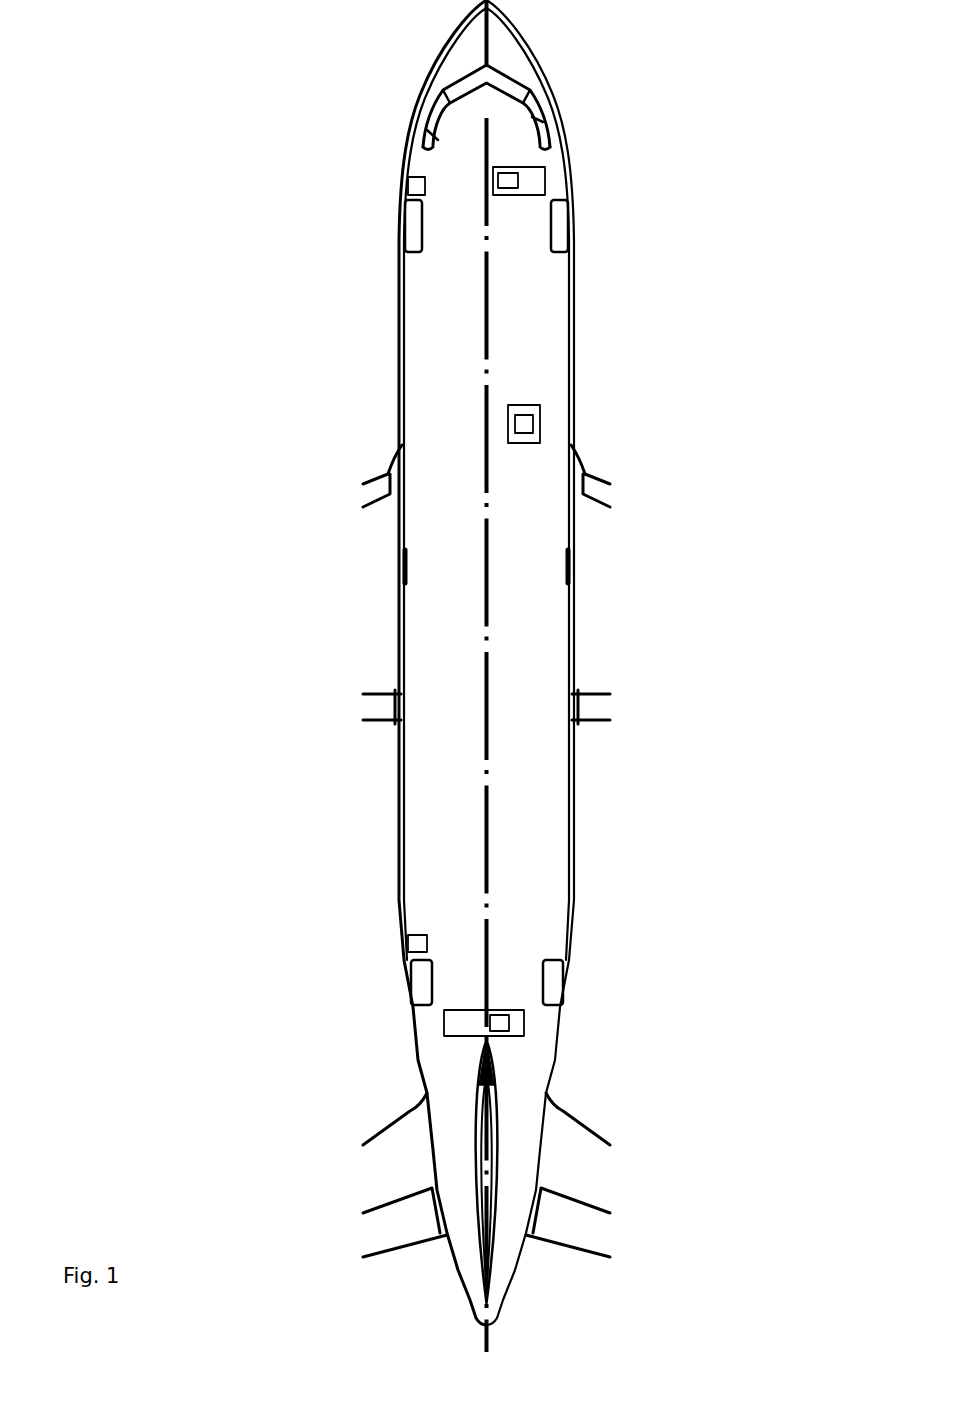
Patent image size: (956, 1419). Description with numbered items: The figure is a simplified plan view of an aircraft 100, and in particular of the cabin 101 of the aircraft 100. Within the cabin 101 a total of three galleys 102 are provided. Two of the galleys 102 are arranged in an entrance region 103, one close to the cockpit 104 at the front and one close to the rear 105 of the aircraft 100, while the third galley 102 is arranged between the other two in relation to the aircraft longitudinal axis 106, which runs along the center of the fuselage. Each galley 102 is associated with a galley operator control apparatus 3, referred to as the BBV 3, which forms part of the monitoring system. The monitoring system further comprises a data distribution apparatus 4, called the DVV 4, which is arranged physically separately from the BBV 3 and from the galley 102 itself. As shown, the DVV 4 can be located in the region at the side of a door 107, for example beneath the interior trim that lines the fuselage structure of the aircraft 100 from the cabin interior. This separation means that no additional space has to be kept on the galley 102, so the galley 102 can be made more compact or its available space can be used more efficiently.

The aircraft 100 is at (268, 142).
The cabin 101 is at (416, 404).
The galley 102 is at (527, 196).
The entrance region 103 is at (458, 250).
The cockpit 104 is at (453, 126).
The rear 105 is at (411, 1062).
The aircraft longitudinal axis 106 is at (483, 790).
The door 107 is at (407, 225).
The galley operator control apparatus 3 is at (520, 175).
The data distribution apparatus 4 is at (408, 187).